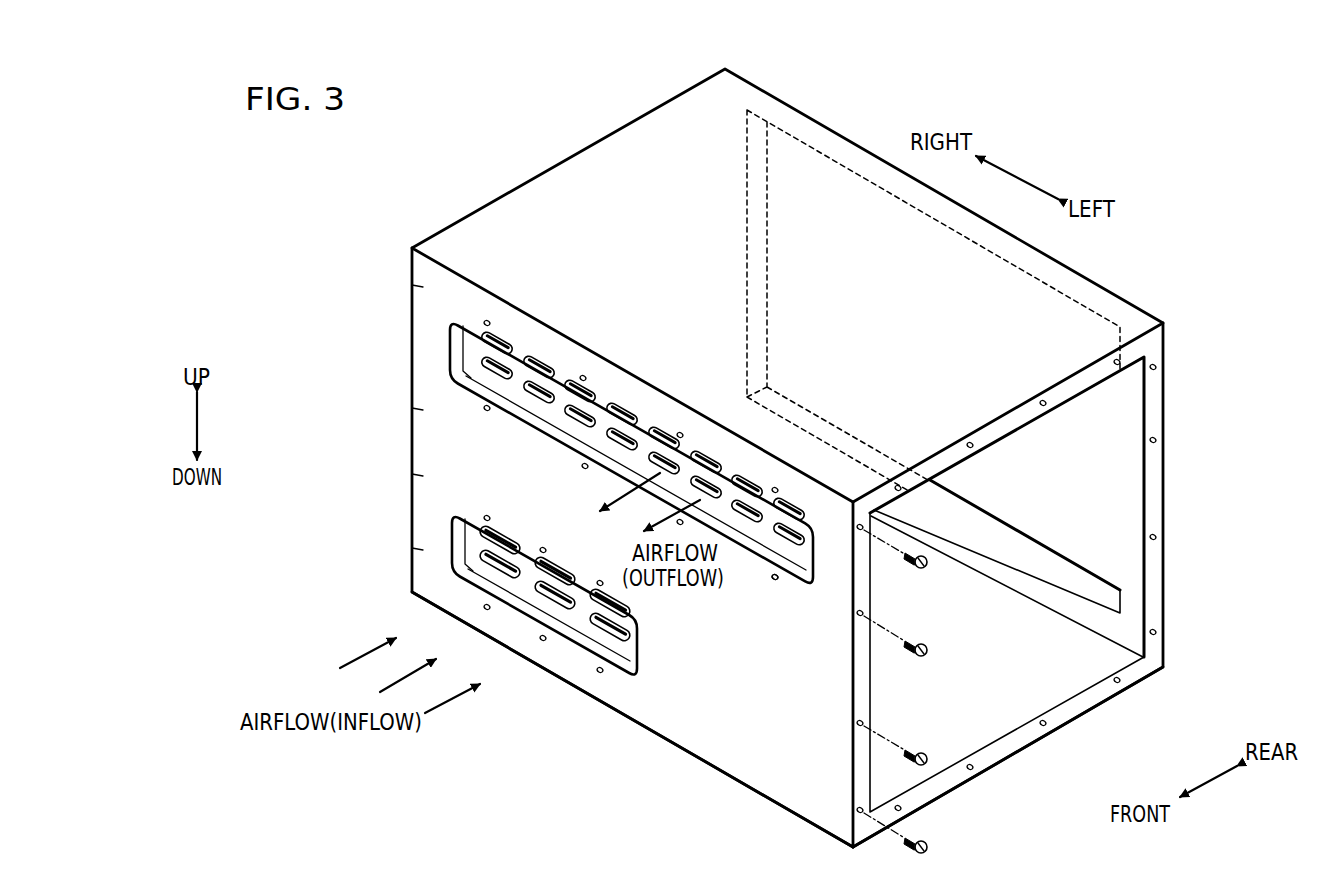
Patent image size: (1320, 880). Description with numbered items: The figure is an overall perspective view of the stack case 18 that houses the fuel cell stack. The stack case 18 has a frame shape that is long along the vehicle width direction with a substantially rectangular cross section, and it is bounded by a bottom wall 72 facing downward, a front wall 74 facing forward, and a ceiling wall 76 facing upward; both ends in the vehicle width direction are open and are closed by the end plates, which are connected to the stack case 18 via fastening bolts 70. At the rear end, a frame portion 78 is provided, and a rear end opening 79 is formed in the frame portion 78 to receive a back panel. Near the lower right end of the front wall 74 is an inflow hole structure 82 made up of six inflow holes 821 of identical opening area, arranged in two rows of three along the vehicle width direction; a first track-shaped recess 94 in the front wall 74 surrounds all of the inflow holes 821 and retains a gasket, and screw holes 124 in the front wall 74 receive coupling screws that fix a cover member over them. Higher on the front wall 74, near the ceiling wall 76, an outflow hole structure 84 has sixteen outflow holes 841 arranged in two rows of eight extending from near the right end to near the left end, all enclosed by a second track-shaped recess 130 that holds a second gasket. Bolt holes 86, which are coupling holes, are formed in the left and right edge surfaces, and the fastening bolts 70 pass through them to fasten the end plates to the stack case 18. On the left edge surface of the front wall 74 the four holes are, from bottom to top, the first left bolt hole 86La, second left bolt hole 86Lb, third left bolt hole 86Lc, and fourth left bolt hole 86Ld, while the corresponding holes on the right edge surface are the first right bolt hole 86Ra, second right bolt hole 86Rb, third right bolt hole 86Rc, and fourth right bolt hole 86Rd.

The stack case 18 is at (454, 125).
The fastening bolt 70 is at (924, 646).
The bottom wall 72 is at (1058, 712).
The front wall 74 is at (707, 727).
The ceiling wall 76 is at (1062, 290).
The frame portion 78 is at (1165, 497).
The rear end opening 79 is at (1018, 540).
The inflow hole structure 82 is at (617, 652).
The outflow hole structure 84 is at (516, 343).
The bolt hole 86 is at (968, 444).
The first left bolt hole 86La is at (860, 809).
The second left bolt hole 86Lb is at (860, 722).
The third left bolt hole 86Lc is at (860, 614).
The fourth left bolt hole 86Ld is at (861, 524).
The first right bolt hole 86Ra is at (423, 550).
The second right bolt hole 86Rb is at (423, 476).
The third right bolt hole 86Rc is at (423, 410).
The fourth right bolt hole 86Rd is at (423, 287).
The first track-shaped recess 94 is at (472, 535).
The screw hole 124 is at (583, 466).
The second track-shaped recess 130 is at (771, 546).
The inflow hole 821 is at (612, 594).
The outflow hole 841 is at (483, 366).